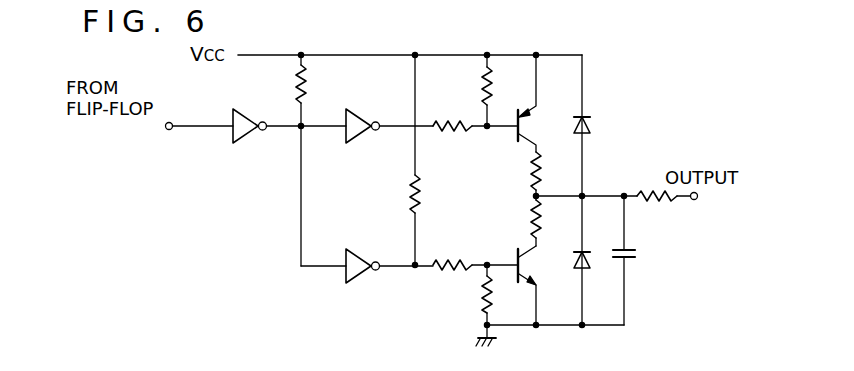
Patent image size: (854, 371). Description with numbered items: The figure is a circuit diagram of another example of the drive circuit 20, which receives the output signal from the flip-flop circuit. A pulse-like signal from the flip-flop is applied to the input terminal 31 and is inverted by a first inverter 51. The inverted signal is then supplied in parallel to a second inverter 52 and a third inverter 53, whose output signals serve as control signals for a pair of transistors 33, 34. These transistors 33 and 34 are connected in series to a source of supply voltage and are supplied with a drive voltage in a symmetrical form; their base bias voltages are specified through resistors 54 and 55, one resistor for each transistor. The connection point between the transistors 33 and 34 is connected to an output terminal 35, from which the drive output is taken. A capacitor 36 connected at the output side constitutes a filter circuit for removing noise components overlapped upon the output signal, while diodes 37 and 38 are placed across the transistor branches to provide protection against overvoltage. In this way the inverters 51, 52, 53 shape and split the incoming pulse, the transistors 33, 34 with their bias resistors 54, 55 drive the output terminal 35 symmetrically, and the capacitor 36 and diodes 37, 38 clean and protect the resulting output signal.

The drive circuit 20 is at (251, 217).
The input terminal 31 is at (169, 130).
The transistor 33 is at (540, 125).
The transistor 34 is at (532, 268).
The output terminal 35 is at (694, 200).
The capacitor 36 is at (636, 254).
The diode 37 is at (590, 125).
The diode 38 is at (586, 268).
The first inverter 51 is at (250, 137).
The second inverter 52 is at (362, 137).
The third inverter 53 is at (362, 252).
The resistor 54 is at (482, 82).
The resistor 55 is at (480, 304).